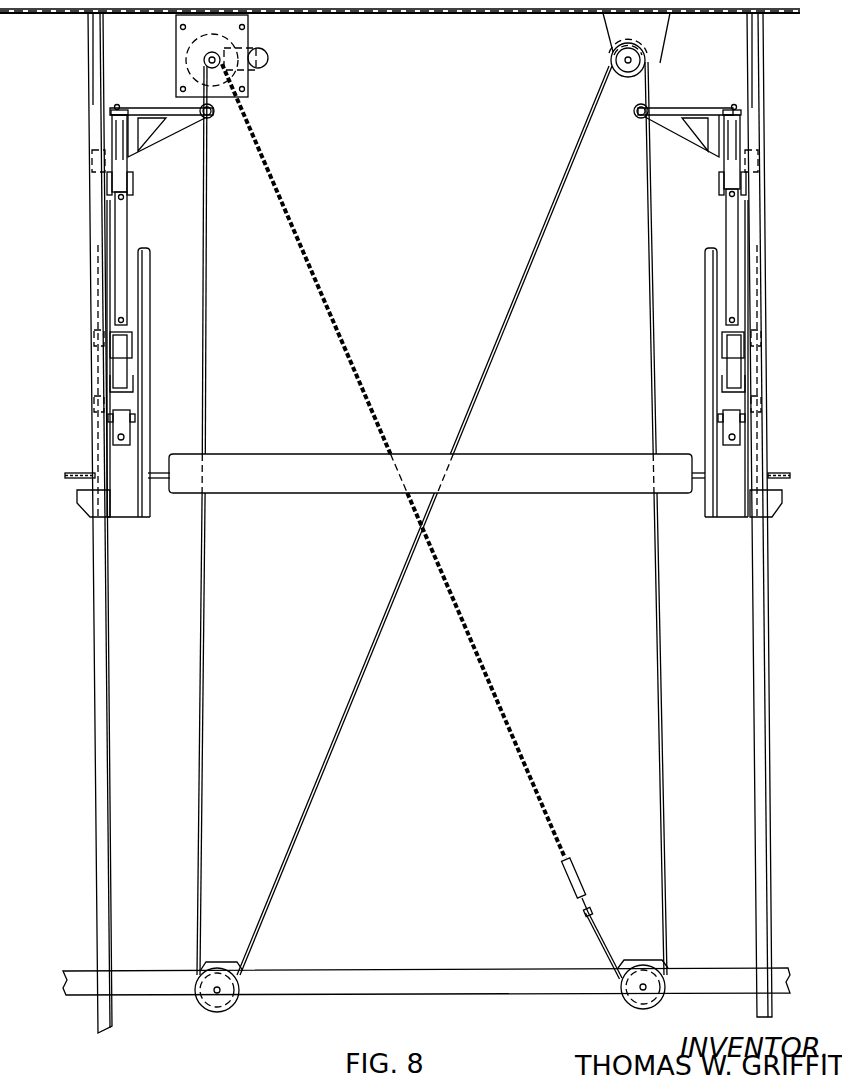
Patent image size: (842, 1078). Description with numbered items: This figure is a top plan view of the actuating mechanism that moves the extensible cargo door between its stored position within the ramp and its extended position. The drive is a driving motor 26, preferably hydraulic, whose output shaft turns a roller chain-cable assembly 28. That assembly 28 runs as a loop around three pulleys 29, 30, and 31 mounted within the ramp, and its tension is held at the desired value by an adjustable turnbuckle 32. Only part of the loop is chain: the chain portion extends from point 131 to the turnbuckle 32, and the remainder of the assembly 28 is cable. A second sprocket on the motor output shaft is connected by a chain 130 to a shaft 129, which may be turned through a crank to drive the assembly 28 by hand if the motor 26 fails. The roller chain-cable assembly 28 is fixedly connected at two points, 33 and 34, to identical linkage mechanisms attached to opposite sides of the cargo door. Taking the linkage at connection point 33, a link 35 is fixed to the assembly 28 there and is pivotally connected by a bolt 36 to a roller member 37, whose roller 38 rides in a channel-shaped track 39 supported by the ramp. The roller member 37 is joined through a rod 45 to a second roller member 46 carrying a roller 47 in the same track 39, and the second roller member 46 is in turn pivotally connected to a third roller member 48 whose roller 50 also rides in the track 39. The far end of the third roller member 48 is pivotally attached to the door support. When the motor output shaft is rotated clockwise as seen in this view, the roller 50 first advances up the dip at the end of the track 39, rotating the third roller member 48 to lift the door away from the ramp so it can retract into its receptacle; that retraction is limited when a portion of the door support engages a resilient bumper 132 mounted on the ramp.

The driving motor 26 is at (196, 50).
The roller chain-cable assembly 28 is at (485, 363).
The pulley 29 is at (626, 80).
The pulley 30 is at (226, 970).
The pulley 31 is at (640, 968).
The adjustable turnbuckle 32 is at (578, 878).
The connection point 33 is at (211, 118).
The connection point 34 is at (638, 117).
The link 35 is at (181, 133).
The bolt 36 is at (112, 106).
The roller member 37 is at (112, 128).
The roller 38 is at (92, 165).
The track 39 is at (104, 580).
The rod 45 is at (126, 252).
The second roller member 46 is at (128, 352).
The roller 47 is at (94, 340).
The third roller member 48 is at (138, 403).
The roller 50 is at (94, 403).
The shaft 129 is at (270, 62).
The chain 130 is at (244, 47).
The point 131 is at (200, 86).
The resilient bumper 132 is at (77, 487).